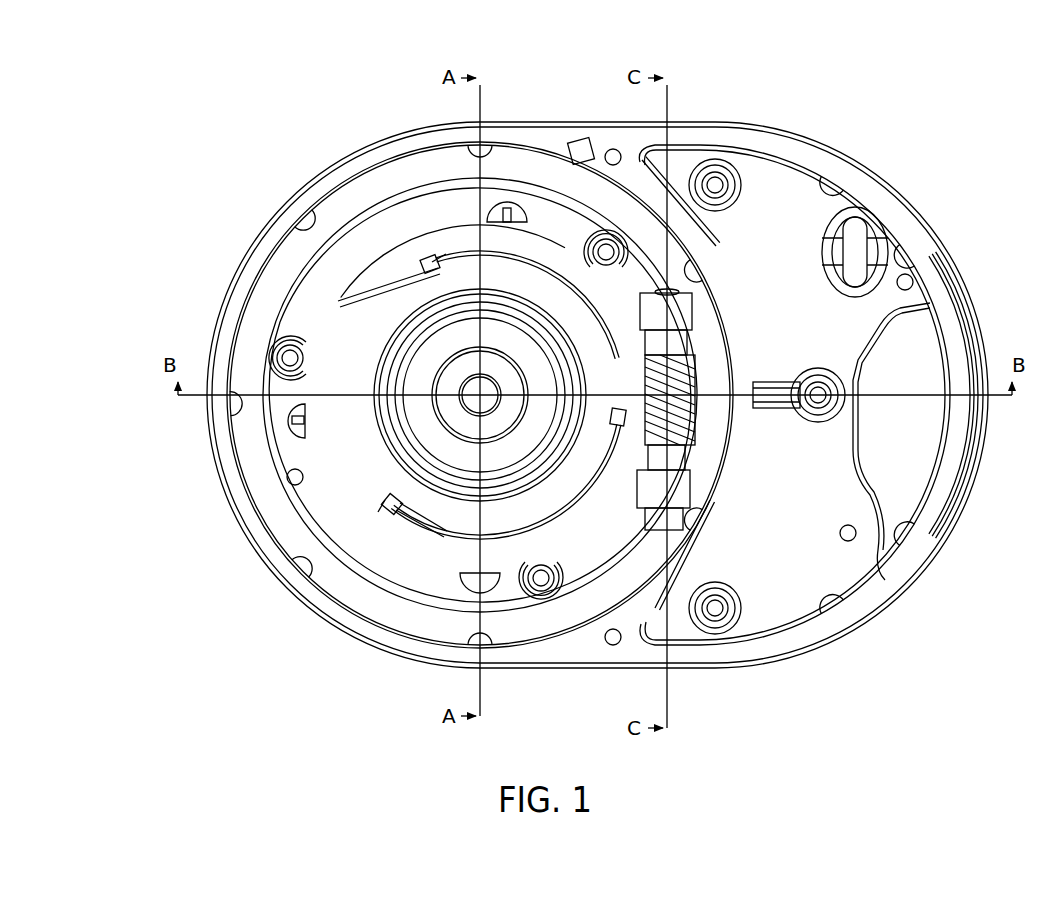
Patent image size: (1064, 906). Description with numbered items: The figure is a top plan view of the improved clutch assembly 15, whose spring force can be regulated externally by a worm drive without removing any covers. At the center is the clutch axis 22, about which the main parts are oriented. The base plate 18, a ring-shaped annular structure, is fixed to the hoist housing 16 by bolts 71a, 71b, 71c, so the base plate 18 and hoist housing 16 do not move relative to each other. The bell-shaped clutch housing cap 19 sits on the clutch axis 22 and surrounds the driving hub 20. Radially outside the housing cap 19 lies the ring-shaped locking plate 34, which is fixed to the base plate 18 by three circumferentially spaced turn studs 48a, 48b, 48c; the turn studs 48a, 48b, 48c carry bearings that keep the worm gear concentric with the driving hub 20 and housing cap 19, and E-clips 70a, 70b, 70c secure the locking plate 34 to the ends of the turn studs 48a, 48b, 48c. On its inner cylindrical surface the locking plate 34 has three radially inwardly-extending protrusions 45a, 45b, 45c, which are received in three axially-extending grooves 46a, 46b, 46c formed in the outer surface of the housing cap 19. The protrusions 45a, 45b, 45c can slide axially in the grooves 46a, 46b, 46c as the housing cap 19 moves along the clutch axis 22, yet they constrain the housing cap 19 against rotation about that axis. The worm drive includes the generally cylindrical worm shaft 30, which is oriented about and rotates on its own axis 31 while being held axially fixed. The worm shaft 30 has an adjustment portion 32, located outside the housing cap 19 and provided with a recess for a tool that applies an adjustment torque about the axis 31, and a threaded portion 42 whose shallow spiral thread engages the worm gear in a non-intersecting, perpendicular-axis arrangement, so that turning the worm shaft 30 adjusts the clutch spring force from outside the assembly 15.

The clutch assembly 15 is at (250, 150).
The hoist housing 16 is at (405, 675).
The base plate 18 is at (370, 232).
The clutch housing cap 19 is at (360, 440).
The driving hub 20 is at (450, 377).
The clutch axis 22 is at (487, 404).
The worm shaft 30 is at (714, 455).
The axis of worm shaft 31 is at (672, 98).
The adjustment portion 32 is at (682, 520).
The locking plate 34 is at (345, 487).
The threaded portion 42 is at (705, 370).
The protrusion 45a is at (403, 509).
The protrusion 45b is at (420, 280).
The protrusion 45c is at (617, 410).
The groove 46a is at (380, 502).
The groove 46b is at (440, 265).
The groove 46c is at (620, 427).
The turn stud 48a is at (288, 356).
The turn stud 48b is at (606, 250).
The turn stud 48c is at (541, 594).
The E-clip 70a is at (284, 341).
The E-clip 70b is at (599, 250).
The E-clip 70c is at (560, 596).
The bolt 71a is at (290, 424).
The bolt 71b is at (488, 590).
The bolt 71c is at (507, 212).